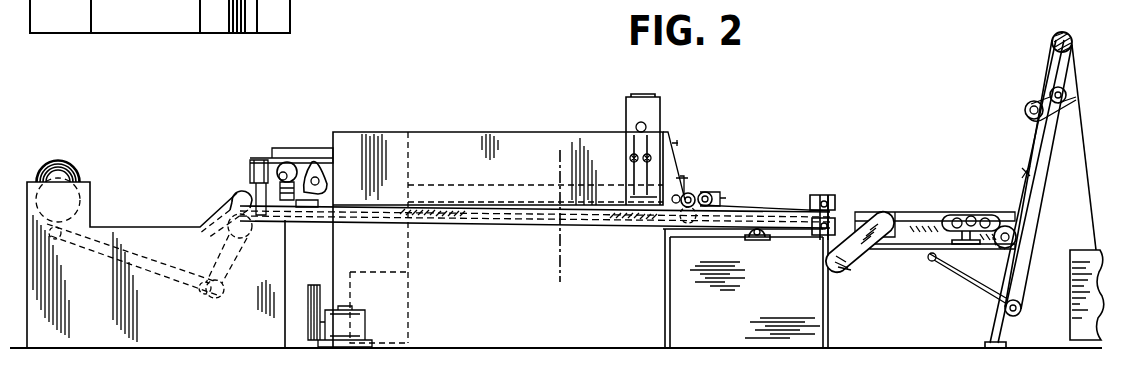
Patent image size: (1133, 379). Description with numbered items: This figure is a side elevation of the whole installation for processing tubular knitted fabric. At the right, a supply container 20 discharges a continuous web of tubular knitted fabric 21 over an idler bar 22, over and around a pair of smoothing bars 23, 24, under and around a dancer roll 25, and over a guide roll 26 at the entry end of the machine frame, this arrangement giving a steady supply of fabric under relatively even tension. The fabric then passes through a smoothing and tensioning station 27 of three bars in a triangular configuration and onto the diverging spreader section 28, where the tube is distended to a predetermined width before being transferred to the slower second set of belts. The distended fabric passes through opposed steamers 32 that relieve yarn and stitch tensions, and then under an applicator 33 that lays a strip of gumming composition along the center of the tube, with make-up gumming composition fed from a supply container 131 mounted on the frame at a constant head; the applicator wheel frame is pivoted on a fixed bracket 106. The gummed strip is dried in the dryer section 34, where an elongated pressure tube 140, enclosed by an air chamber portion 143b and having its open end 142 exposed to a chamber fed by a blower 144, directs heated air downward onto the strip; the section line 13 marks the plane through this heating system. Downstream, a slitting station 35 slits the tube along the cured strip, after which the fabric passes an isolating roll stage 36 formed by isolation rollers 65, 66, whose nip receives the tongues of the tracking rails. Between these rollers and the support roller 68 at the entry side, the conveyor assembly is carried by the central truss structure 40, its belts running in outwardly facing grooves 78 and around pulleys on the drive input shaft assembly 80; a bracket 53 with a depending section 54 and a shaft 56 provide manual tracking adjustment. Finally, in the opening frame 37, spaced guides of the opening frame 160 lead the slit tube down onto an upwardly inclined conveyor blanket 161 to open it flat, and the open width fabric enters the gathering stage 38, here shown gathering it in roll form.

The section line 13- 13 is at (552, 160).
The supply container 20 is at (1088, 309).
The continuous web of tubular knitted fabric 21 is at (1079, 72).
The idler bar 22 is at (1062, 32).
The smoothing bar 23 is at (1025, 117).
The smoothing bar 24 is at (1050, 93).
The dancer roll 25 is at (1015, 318).
The guide roll 26 is at (1009, 225).
The smoothing and tensioning station 27 is at (958, 215).
The spreader section 28 is at (899, 204).
The steamers 32 is at (818, 195).
The applicator 33 is at (692, 187).
The dryer section 34 is at (469, 163).
The slitting station 35 is at (314, 157).
The isolating roll stage 36 is at (234, 182).
The opening frame 37 is at (151, 215).
The gathering stage 38 is at (54, 165).
The central truss structure 40 is at (505, 224).
The bracket 53 is at (296, 158).
The depending section 54 is at (301, 208).
The shaft 56 is at (281, 167).
The isolation roller 65 is at (231, 194).
The isolation roller 66 is at (241, 240).
The support roller 68 is at (758, 241).
The outwardly facing grooves 78 is at (58, 200).
The drive input shaft assembly 80 is at (257, 210).
The bracket 106 is at (672, 160).
The supply container 131 is at (650, 110).
The pressure tube 140 is at (485, 189).
The open end of the pressure tube 142 is at (408, 185).
The housing top 143b is at (503, 133).
The blower 144 is at (385, 272).
The opening frame 160 is at (212, 242).
The conveyor blanket 161 is at (204, 291).